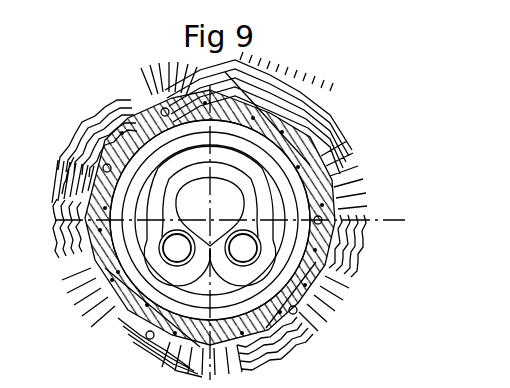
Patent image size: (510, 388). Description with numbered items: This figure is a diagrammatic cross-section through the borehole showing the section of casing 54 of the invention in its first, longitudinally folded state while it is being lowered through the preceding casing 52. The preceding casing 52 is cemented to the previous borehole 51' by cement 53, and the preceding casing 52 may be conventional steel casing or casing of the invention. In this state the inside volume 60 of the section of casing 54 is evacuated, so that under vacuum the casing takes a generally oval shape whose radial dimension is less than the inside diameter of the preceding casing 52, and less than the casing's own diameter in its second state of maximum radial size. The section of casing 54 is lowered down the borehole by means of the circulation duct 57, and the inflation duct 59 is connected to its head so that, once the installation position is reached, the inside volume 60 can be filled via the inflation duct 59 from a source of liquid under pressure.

The previous borehole 51' is at (224, 214).
The preceding casing 52 is at (312, 196).
The cement 53 is at (300, 150).
The section of casing 54 is at (300, 282).
The circulation duct 57 is at (170, 262).
The inflation duct 59 is at (245, 270).
The inside volume 60 is at (178, 167).